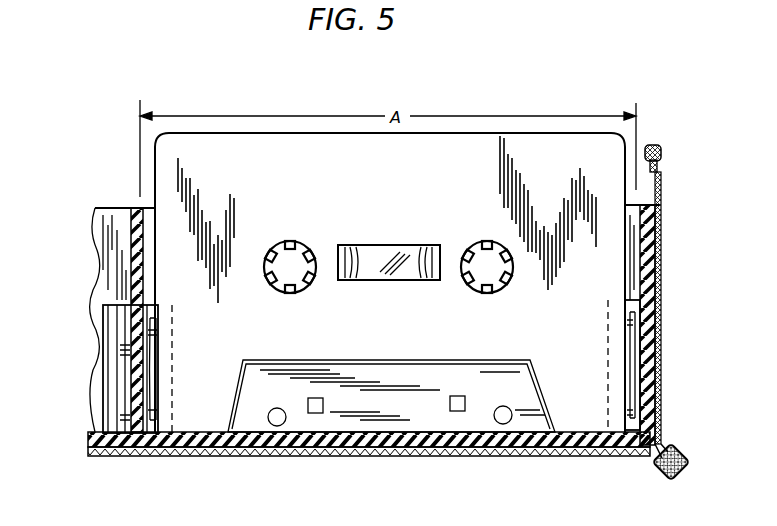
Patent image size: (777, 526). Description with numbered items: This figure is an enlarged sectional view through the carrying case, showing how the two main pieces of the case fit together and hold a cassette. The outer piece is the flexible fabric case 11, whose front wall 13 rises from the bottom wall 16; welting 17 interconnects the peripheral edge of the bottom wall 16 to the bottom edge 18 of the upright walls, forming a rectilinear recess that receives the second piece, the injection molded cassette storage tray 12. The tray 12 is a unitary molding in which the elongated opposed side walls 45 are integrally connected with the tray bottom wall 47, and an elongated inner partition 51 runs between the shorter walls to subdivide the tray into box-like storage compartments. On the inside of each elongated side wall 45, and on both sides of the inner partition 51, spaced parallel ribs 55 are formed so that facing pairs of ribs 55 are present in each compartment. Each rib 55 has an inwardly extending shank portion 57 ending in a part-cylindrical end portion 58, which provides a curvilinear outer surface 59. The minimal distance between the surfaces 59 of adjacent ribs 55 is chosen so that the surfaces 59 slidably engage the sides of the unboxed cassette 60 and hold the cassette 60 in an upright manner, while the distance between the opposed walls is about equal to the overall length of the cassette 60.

The flexible fabric case 11 is at (663, 246).
The cassette storage tray 12 is at (648, 312).
The front wall 13 is at (650, 362).
The bottom wall 16 is at (463, 457).
The welting 17 is at (685, 456).
The bottom edge 18 is at (662, 445).
The elongated side wall 45 is at (650, 230).
The tray bottom wall 47 is at (372, 445).
The elongated inner partition 51 is at (133, 250).
The rib 55 is at (103, 388).
The shank portion 57 is at (130, 295).
The part-cylindrical end portion 58 is at (124, 300).
The curvilinear outer surface 59 is at (108, 335).
The unboxed cassette 60 is at (306, 184).